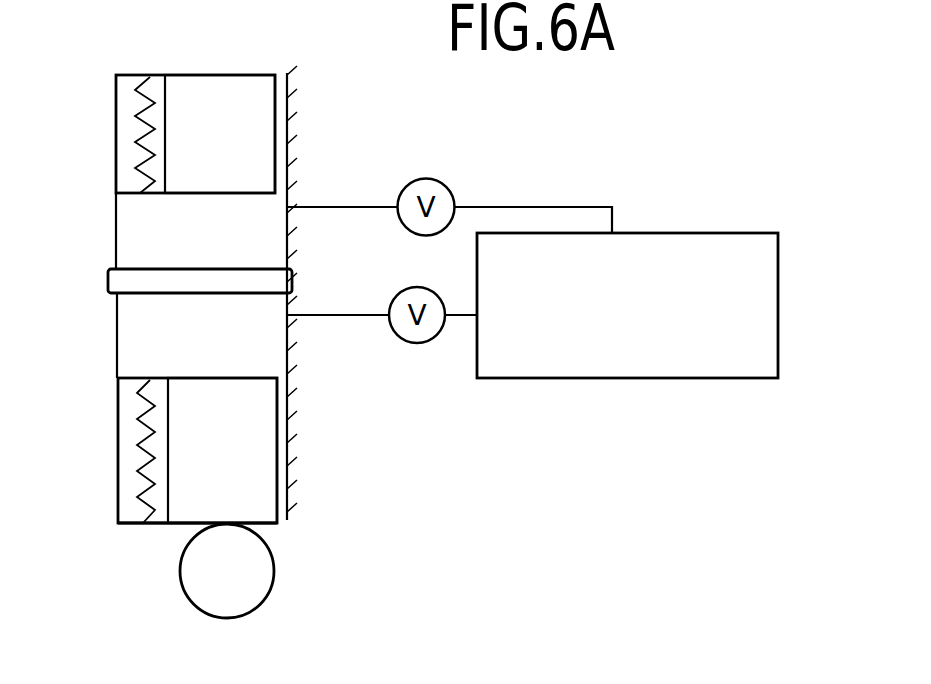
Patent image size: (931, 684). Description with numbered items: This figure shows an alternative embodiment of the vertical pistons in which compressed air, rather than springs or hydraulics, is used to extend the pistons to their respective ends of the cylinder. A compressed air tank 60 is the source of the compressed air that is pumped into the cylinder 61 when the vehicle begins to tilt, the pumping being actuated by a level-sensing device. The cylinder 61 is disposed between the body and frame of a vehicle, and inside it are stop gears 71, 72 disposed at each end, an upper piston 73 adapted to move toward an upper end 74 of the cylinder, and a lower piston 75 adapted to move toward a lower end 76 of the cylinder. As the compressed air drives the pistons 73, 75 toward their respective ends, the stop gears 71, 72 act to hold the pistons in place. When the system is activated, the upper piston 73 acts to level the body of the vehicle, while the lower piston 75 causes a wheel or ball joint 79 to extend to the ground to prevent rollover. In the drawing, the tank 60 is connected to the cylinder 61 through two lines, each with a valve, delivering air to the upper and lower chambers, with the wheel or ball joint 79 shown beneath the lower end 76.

The compressed air tank 60 is at (758, 233).
The cylinder 61 is at (288, 135).
The stop gear 71 is at (130, 123).
The stop gear 72 is at (128, 467).
The upper piston 73 is at (255, 113).
The upper end 74 is at (248, 75).
The lower piston 75 is at (253, 452).
The lower end 76 is at (268, 525).
The wheel or ball joint 79 is at (253, 590).